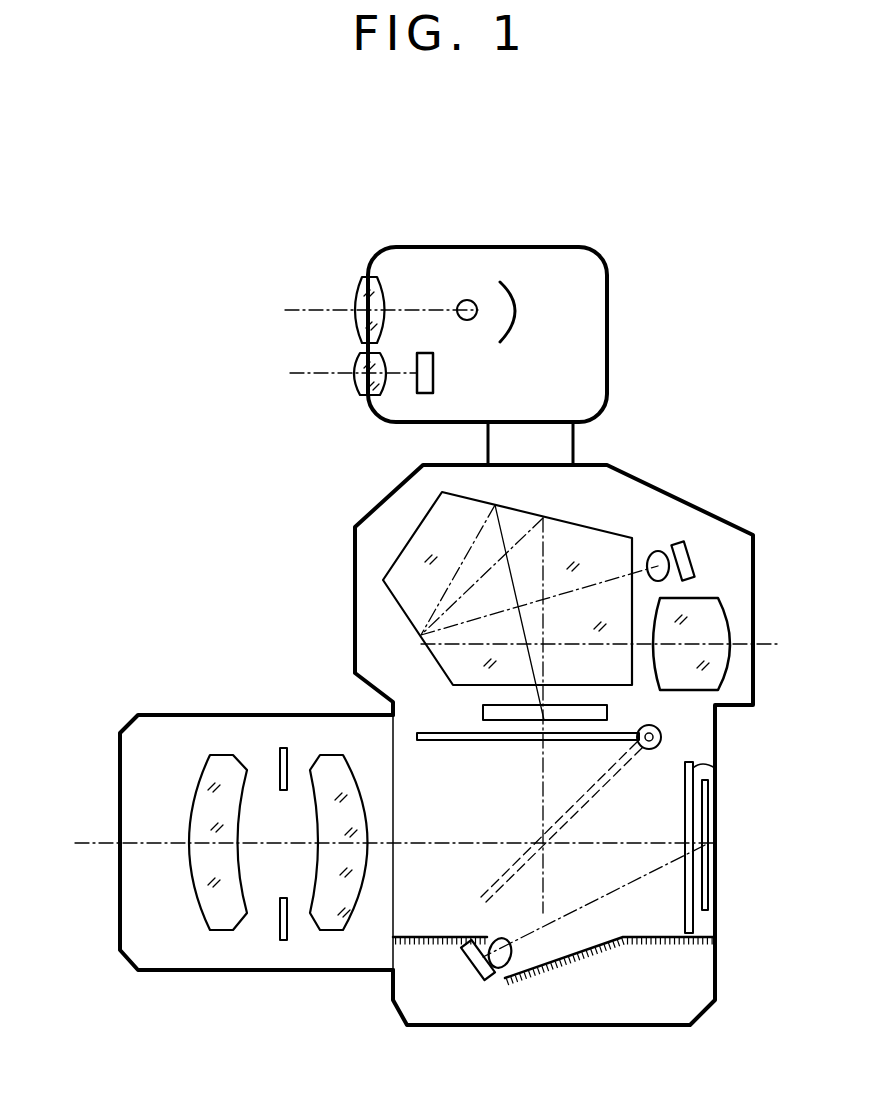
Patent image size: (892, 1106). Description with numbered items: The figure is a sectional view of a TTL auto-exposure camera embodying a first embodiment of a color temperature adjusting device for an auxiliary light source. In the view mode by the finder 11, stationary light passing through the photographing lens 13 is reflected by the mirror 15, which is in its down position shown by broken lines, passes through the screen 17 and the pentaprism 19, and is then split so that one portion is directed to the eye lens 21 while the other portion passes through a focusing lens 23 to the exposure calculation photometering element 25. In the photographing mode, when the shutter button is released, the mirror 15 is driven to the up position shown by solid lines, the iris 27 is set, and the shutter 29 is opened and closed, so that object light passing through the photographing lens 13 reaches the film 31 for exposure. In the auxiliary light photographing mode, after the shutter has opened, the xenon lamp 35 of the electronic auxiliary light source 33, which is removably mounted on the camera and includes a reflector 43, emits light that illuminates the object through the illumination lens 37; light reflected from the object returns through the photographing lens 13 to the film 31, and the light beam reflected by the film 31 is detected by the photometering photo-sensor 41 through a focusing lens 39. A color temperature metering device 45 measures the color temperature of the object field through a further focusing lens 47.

The finder 11 is at (753, 547).
The photographing lens 13 is at (208, 756).
The mirror 15 is at (458, 745).
The screen 17 is at (483, 712).
The pentaprism 19 is at (408, 602).
The eye lens 21 is at (733, 612).
The focusing lens 23 is at (650, 552).
The exposure calculation photometering element 25 is at (688, 543).
The iris 27 is at (283, 747).
The shutter 29 is at (697, 762).
The film 31 is at (705, 812).
The electronic auxiliary light source 33 is at (600, 342).
The xenon lamp 35 is at (480, 300).
The illumination lens 37 is at (358, 290).
The focusing lens 39 is at (515, 977).
The photometering photo-sensor 41 is at (480, 983).
The reflector 43 is at (522, 297).
The color temperature metering device 45 is at (423, 397).
The focusing lens 47 is at (358, 395).